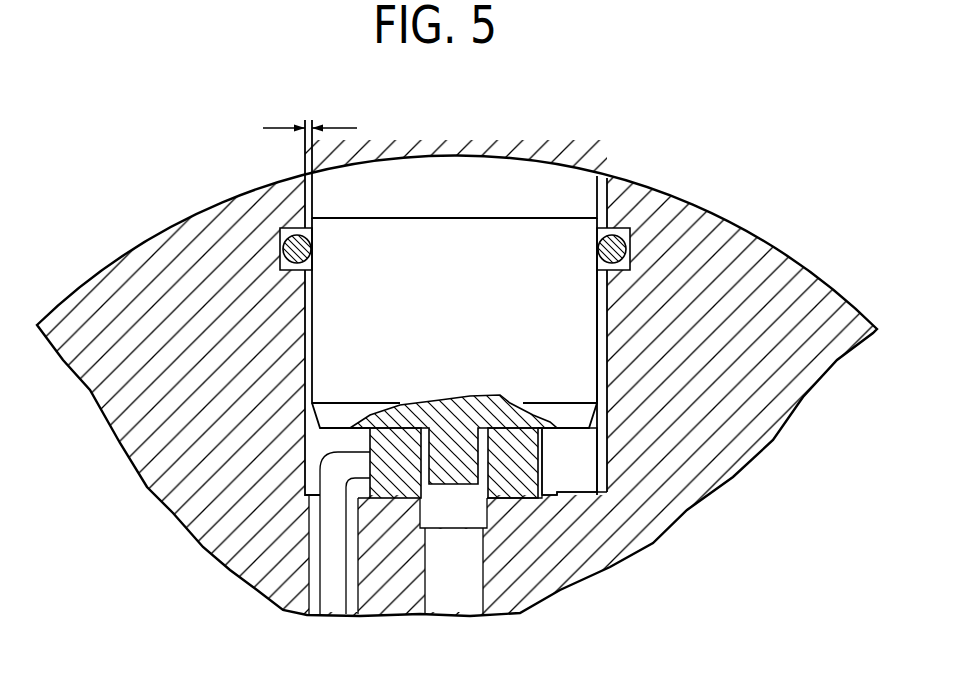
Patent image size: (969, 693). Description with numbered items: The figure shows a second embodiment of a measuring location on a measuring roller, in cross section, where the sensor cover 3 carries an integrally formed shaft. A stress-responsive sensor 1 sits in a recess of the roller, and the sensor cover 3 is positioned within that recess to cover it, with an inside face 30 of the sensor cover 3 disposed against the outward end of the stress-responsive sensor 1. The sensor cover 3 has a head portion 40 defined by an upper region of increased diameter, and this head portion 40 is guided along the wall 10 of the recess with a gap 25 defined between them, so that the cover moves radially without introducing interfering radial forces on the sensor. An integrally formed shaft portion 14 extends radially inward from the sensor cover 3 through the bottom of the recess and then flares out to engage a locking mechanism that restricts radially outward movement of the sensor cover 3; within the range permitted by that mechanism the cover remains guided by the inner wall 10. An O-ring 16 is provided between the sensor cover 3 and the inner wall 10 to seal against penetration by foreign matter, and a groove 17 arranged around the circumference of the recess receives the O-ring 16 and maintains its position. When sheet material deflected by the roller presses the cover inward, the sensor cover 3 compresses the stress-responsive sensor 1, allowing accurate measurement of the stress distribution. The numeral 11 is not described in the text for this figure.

The stress-responsive sensor 1 is at (492, 405).
The sensor cover 3 is at (508, 247).
The wall of the recess 10 is at (594, 300).
The valve seat 11 is at (513, 405).
The shaft portion 14 is at (447, 472).
The O-ring 16 is at (457, 368).
The groove 17 is at (293, 226).
The gap 25 is at (312, 118).
The inside face 30 is at (562, 432).
The head portion 40 is at (427, 183).